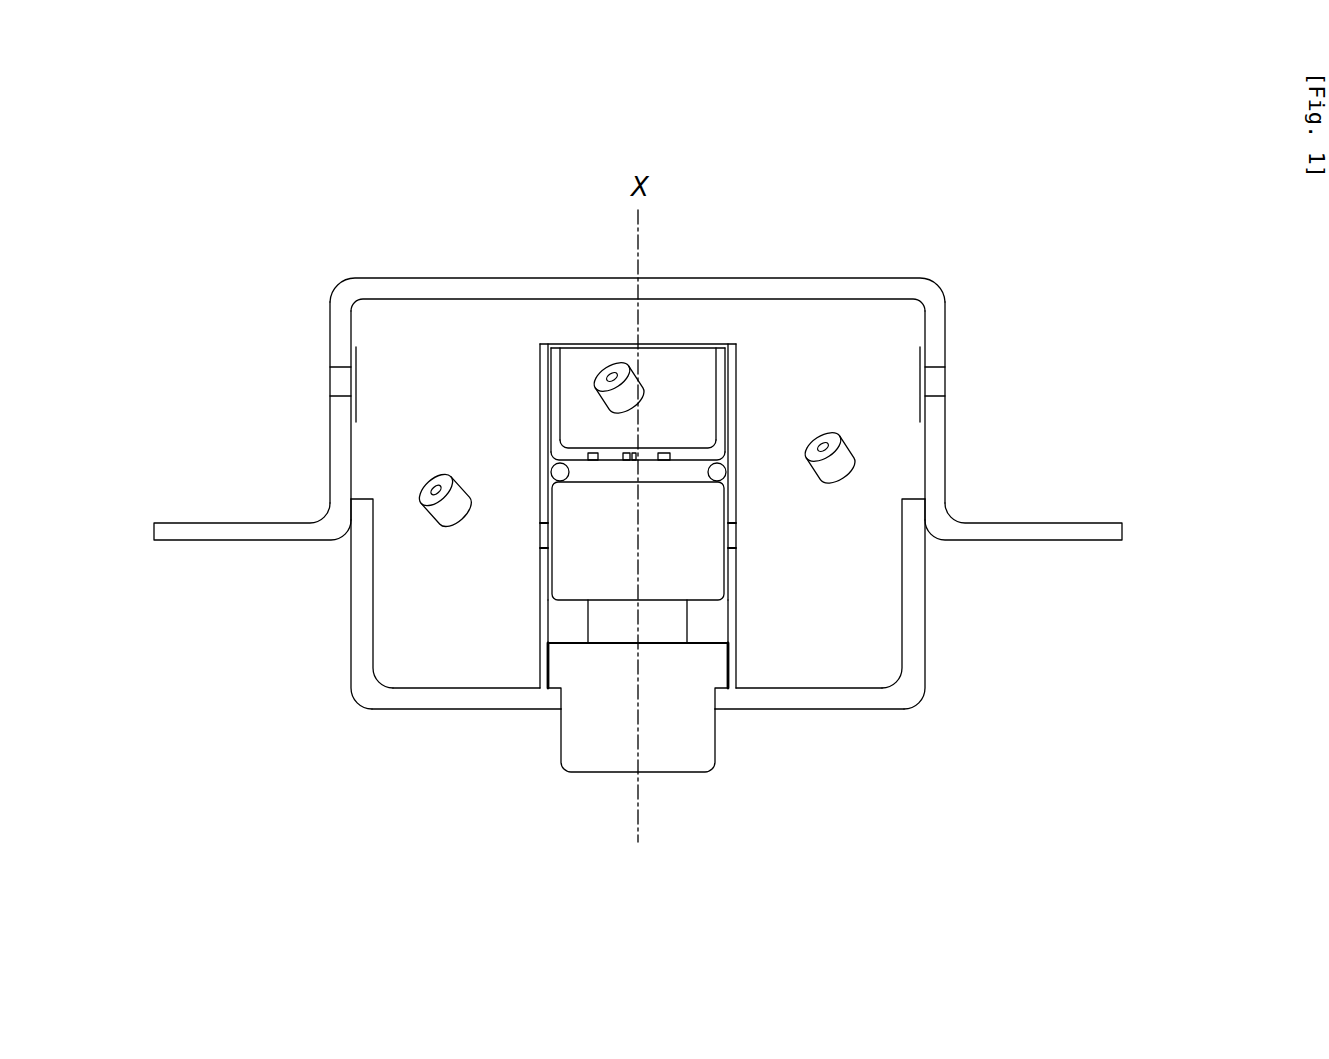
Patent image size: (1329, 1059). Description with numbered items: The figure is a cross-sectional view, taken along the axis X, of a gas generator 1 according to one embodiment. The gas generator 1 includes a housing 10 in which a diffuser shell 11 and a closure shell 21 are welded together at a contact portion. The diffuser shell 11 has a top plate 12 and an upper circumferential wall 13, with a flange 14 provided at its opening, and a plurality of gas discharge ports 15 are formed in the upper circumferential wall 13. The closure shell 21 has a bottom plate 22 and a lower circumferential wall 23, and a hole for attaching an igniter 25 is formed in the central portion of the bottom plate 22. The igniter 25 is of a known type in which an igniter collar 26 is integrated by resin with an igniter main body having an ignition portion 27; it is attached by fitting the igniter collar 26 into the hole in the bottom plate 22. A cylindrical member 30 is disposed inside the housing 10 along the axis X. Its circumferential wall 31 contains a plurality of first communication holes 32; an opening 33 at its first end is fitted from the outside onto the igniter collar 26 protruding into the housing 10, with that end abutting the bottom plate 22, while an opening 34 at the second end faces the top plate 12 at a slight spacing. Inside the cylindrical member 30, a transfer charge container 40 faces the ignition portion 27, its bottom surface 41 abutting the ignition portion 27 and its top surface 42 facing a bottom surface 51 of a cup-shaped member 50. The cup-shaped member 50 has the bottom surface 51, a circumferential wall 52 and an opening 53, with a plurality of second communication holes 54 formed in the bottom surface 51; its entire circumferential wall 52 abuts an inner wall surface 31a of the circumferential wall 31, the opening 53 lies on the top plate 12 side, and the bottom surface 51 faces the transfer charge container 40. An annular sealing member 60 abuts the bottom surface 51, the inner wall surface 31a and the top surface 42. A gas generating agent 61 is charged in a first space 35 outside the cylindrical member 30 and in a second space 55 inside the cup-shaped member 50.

The gas generator 1 is at (440, 272).
The housing 10 is at (1190, 497).
The diffuser shell 11 is at (950, 472).
The top plate 12 is at (803, 278).
The upper circumferential wall 13 is at (946, 326).
The flange 14 is at (175, 524).
The gas discharge ports 15 is at (936, 387).
The closure shell 21 is at (934, 592).
The bottom plate 22 is at (828, 710).
The lower circumferential wall 23 is at (927, 650).
The igniter 25 is at (478, 752).
The igniter collar 26 is at (600, 733).
The ignition portion 27 is at (618, 630).
The cylindrical member 30 is at (750, 401).
The circumferential wall 31 is at (738, 448).
The inner wall surface 31a is at (563, 614).
The first communication holes 32 is at (735, 536).
The opening 33 is at (723, 692).
The opening 34 is at (727, 365).
The first space 35 is at (389, 368).
The transfer charge container 40 is at (576, 578).
The bottom surface 41 is at (708, 603).
The top surface 42 is at (665, 468).
The cup-shaped member 50 is at (730, 366).
The bottom surface 51 is at (583, 462).
The circumferential wall 52 is at (554, 357).
The opening 53 is at (670, 345).
The second communication holes 54 is at (628, 460).
The second space 55 is at (662, 431).
The annular sealing member 60 is at (722, 470).
The gas generating agent 61 is at (611, 372).